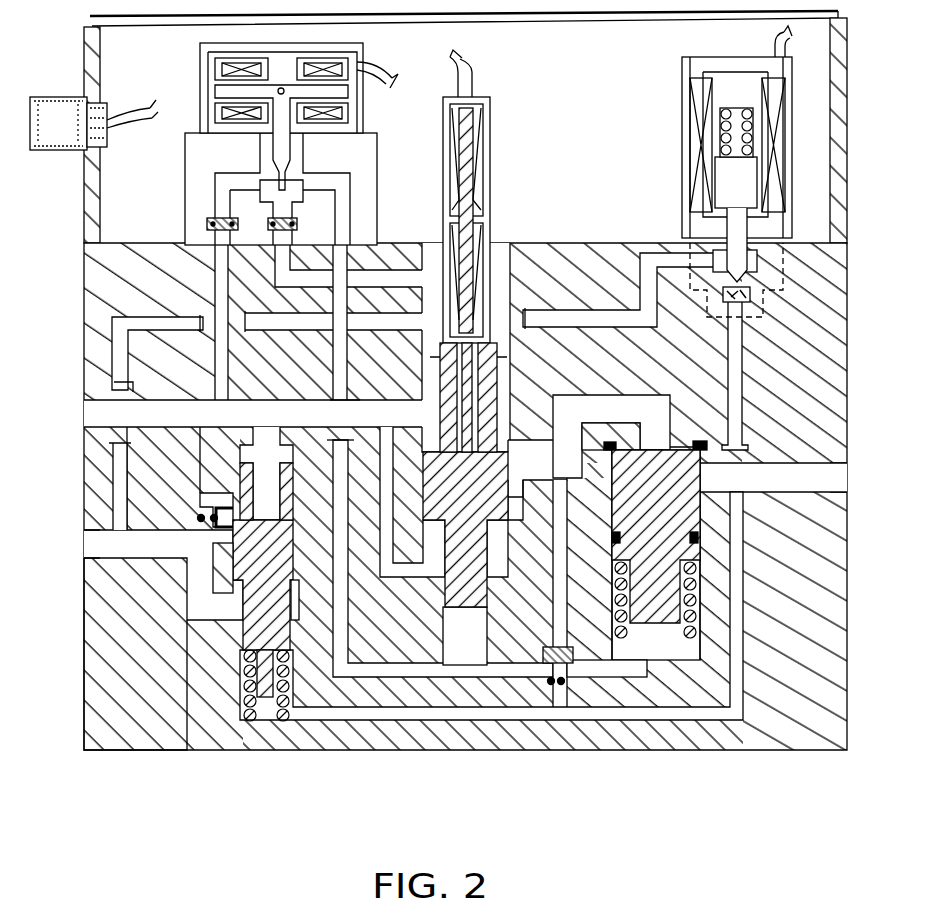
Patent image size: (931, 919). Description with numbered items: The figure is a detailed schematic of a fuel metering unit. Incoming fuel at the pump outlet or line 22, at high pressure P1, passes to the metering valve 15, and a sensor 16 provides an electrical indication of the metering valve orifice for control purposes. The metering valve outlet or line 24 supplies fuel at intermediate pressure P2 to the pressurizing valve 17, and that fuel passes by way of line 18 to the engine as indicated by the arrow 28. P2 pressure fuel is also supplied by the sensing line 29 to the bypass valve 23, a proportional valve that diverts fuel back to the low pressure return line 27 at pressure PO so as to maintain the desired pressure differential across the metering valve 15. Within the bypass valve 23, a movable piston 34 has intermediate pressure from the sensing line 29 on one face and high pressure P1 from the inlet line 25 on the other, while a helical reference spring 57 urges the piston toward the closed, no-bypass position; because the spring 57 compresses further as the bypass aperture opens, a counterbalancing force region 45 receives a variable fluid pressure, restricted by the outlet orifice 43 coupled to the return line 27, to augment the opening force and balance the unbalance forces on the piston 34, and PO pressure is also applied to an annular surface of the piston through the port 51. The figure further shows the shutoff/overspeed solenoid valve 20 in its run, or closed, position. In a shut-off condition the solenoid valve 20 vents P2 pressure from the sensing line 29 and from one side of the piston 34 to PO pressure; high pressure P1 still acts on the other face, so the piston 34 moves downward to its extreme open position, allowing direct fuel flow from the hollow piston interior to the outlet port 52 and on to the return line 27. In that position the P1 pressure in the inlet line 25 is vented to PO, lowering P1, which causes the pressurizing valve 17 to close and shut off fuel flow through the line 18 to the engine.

The metering valve 15 is at (479, 507).
The sensor 16 is at (492, 160).
The pressurizing valve 17 is at (665, 528).
The line 18 is at (784, 488).
The shutoff/overspeed solenoid valve 20 is at (688, 165).
The pump outlet or line 22 is at (96, 415).
The bypass valve 23 is at (303, 538).
The metering valve outlet or line 24 is at (626, 420).
The inlet line 25 is at (268, 452).
The low pressure return line 27 is at (173, 554).
The arrow 28 is at (832, 477).
The sensing line 29 is at (407, 713).
The piston 34 is at (280, 564).
The orifice 43 is at (200, 522).
The counterbalancing force region 45 is at (226, 497).
The port 51 is at (240, 592).
The outlet port 52 is at (233, 537).
The helical reference spring 57 is at (263, 713).
The pressure P1 is at (342, 413).
The pressure P2 is at (537, 575).
The pressure P0 PO is at (98, 543).